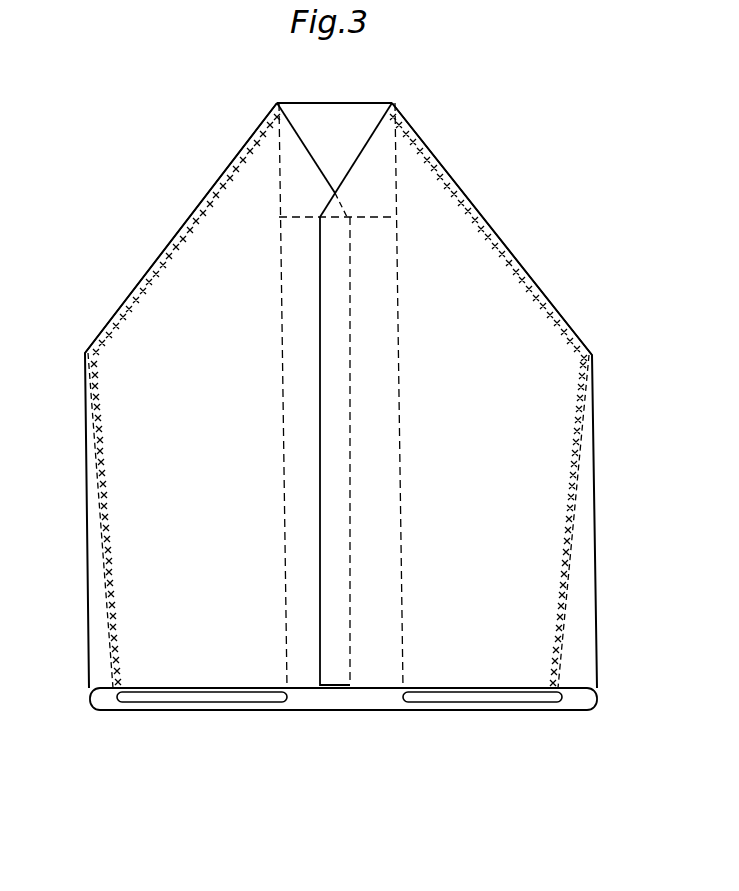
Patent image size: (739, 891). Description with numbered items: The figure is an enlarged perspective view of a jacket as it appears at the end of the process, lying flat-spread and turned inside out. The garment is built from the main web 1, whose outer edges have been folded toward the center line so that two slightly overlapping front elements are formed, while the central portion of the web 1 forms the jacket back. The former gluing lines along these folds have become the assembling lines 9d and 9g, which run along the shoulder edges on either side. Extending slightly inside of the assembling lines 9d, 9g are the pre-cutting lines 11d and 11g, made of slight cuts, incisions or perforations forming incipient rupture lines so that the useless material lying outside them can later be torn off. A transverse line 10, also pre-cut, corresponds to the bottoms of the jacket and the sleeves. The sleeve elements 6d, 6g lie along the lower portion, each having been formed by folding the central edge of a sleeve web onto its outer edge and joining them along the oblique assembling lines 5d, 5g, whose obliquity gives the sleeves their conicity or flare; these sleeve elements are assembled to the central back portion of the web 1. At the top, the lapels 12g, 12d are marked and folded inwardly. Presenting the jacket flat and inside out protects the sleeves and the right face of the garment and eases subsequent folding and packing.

The main web 1 is at (351, 702).
The oblique assembling line 5g is at (105, 510).
The oblique assembling line 5d is at (570, 512).
The sleeve element 6g is at (207, 706).
The sleeve element 6d is at (480, 706).
The assembling line 9g is at (156, 264).
The assembling line 9d is at (524, 264).
The transverse line 10 is at (347, 102).
The pre-cutting line 11g is at (186, 234).
The pre-cutting line 11d is at (488, 237).
The lapel 12g is at (292, 193).
The lapel 12d is at (382, 198).